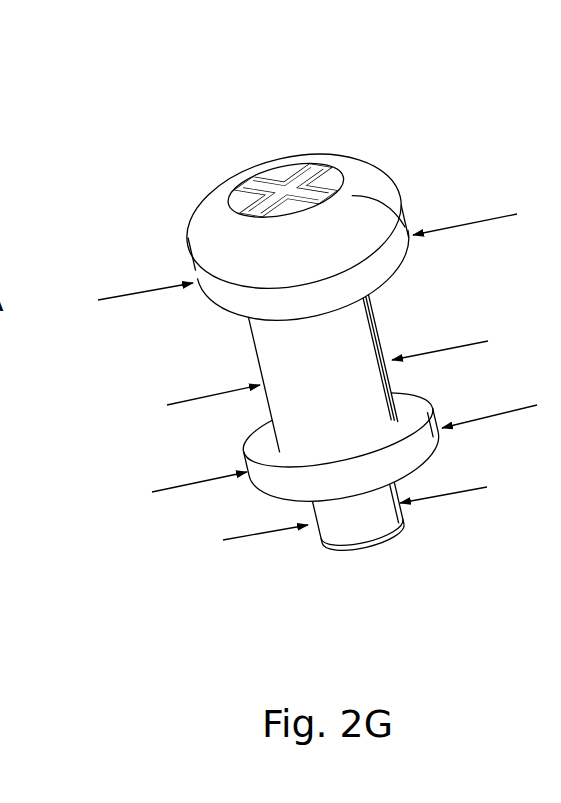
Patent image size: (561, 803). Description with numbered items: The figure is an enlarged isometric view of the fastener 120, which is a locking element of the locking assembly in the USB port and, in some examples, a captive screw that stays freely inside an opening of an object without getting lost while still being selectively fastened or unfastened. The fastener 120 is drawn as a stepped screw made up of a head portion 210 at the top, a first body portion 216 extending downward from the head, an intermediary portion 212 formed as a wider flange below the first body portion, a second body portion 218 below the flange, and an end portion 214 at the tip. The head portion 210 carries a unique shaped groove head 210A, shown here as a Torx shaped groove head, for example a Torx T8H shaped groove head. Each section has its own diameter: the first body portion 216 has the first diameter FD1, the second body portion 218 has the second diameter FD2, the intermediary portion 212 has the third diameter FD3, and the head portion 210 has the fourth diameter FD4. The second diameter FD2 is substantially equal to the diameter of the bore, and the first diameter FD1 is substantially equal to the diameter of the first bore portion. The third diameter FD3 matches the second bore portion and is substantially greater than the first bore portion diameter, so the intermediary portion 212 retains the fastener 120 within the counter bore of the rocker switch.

The fastener 120 is at (125, 145).
The head portion 210 is at (363, 220).
The unique shaped groove head 210A is at (287, 160).
The first body portion 216 is at (390, 330).
The intermediary portion 212 is at (267, 483).
The second body portion 218 is at (393, 490).
The end portion 214 is at (393, 530).
The first diameter FD1 is at (193, 398).
The second diameter FD2 is at (287, 527).
The third diameter FD3 is at (177, 487).
The fourth diameter FD4 is at (125, 295).